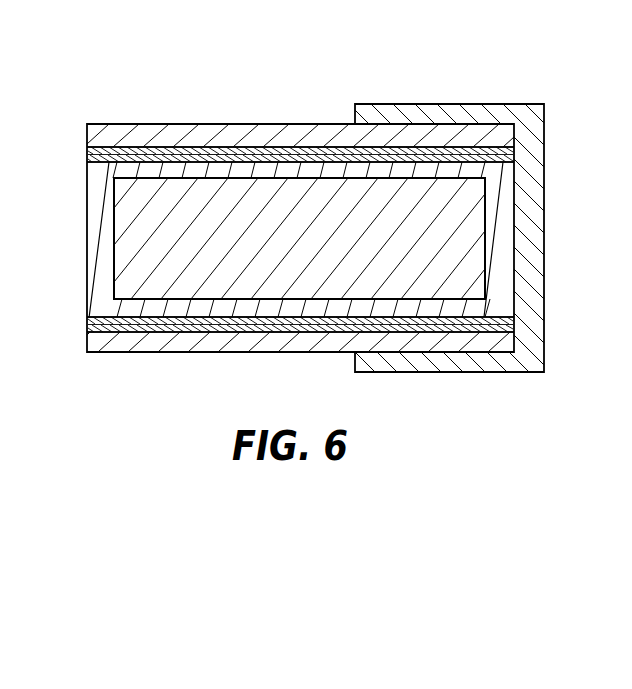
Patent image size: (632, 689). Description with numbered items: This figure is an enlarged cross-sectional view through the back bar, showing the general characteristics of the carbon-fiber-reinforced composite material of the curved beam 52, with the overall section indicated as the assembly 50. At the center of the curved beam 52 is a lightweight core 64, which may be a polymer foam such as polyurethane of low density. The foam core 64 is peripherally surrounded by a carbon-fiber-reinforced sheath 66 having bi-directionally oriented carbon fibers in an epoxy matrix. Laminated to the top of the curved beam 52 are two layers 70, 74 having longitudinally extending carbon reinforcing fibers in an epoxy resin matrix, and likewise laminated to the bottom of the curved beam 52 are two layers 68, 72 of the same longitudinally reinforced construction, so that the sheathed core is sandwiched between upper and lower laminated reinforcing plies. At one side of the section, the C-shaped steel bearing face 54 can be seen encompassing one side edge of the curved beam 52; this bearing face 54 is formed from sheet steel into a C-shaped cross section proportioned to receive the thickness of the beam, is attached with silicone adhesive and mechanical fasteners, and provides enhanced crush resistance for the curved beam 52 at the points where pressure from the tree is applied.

The laminate assembly 50 is at (171, 112).
The curved beam 52 is at (137, 212).
The steel bearing face 54 is at (532, 177).
The lightweight core 64 is at (145, 285).
The carbon-fiber-reinforced sheath 66 is at (202, 302).
The bottom layer 68 is at (253, 322).
The top layer 70 is at (345, 155).
The bottom layer 72 is at (330, 343).
The top layer 74 is at (243, 137).